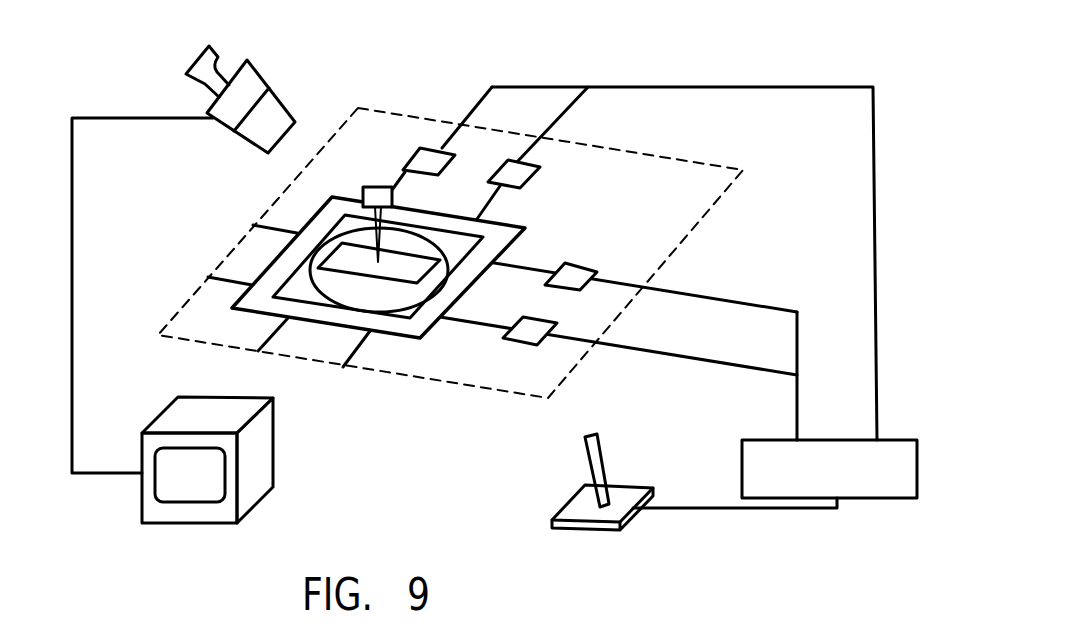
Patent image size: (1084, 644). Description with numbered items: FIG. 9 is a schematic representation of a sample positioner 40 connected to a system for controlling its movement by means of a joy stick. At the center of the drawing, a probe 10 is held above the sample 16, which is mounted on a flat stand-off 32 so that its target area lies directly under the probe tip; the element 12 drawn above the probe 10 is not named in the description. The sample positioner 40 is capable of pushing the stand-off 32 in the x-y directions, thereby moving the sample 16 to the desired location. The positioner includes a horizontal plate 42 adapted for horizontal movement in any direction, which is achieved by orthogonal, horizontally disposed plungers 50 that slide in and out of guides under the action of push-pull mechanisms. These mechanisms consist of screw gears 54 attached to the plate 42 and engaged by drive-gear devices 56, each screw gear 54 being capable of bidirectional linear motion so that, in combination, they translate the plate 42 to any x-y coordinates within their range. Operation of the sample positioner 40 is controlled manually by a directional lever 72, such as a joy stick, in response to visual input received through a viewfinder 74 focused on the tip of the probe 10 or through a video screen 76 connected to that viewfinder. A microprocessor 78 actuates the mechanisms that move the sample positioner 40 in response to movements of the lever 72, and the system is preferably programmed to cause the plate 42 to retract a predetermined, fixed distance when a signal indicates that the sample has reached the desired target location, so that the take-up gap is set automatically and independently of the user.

The probe 10 is at (382, 224).
The laser 12 is at (383, 187).
The sample 16 is at (348, 262).
The stand-off 32 is at (357, 305).
The sample positioner 40 is at (746, 170).
The plate 42 is at (437, 323).
The plungers 50 is at (270, 226).
The screw gears 54 is at (520, 267).
The drive-gear devices 56 is at (517, 180).
The directional lever 72 is at (598, 468).
The viewfinder 74 is at (248, 78).
The video screen 76 is at (263, 457).
The microprocessor 78 is at (890, 452).